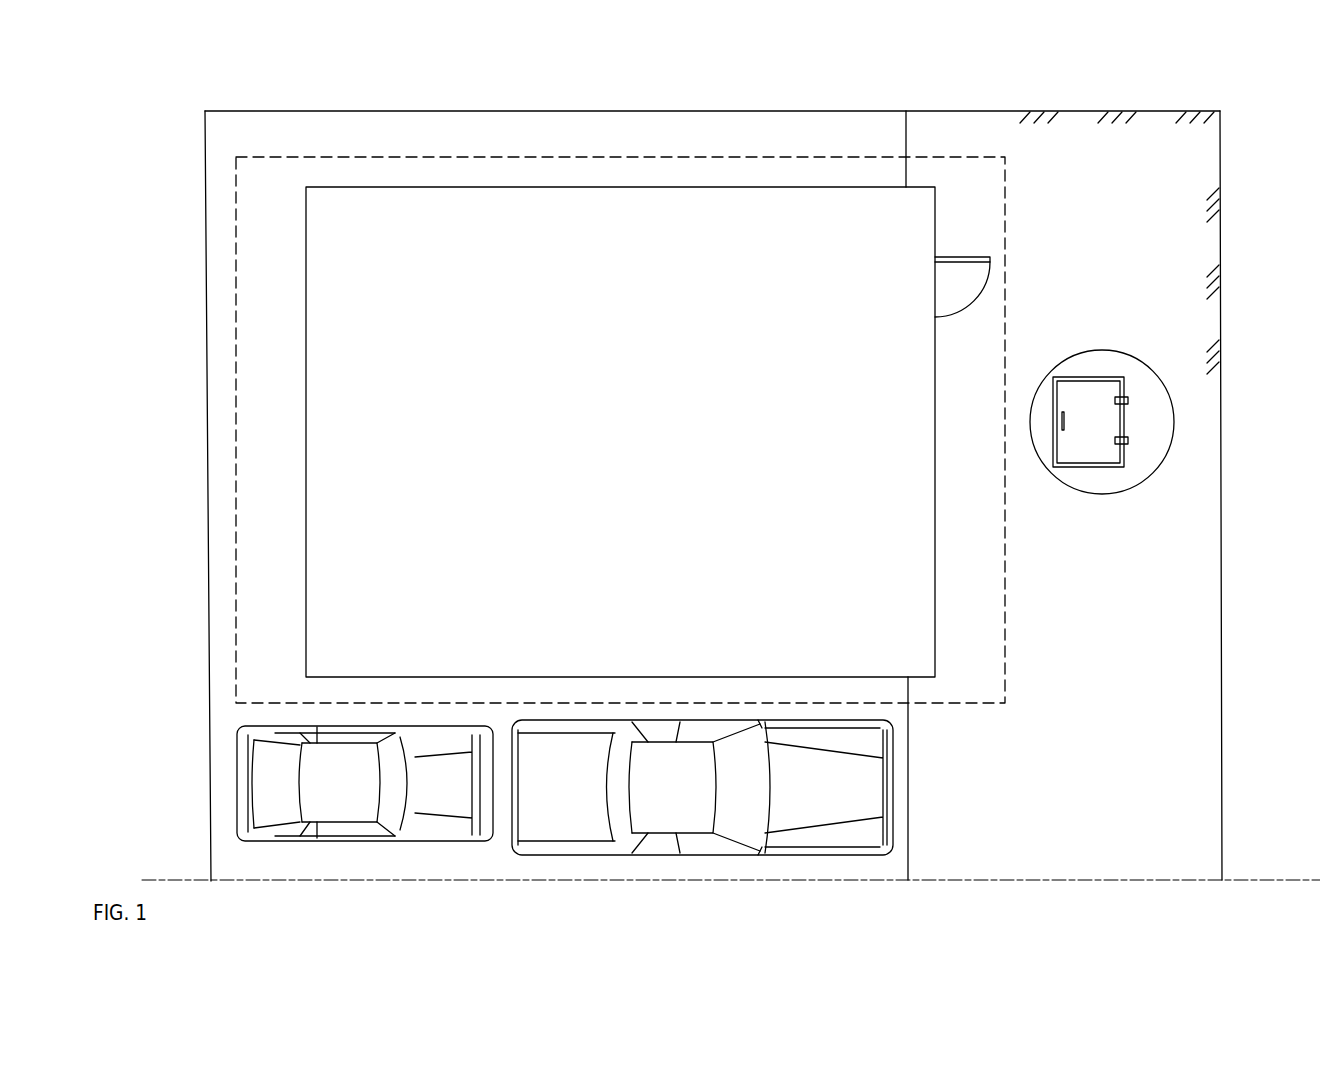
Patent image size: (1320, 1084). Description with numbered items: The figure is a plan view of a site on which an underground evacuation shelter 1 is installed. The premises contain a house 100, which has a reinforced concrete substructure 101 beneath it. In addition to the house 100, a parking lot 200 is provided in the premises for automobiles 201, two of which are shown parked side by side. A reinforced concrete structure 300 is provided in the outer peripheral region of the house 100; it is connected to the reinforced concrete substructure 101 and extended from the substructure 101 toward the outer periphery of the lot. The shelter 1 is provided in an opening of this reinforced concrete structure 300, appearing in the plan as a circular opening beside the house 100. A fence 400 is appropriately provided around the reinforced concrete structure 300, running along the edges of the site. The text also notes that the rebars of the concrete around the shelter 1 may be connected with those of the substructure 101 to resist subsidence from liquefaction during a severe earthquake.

The underground evacuation shelter 1 is at (1185, 406).
The house 100 is at (573, 184).
The reinforced concrete substructure 101 is at (236, 325).
The parking lot 200 is at (855, 865).
The automobile 201 is at (363, 842).
The reinforced concrete structure 300 is at (1110, 853).
The fence 400 is at (1226, 523).